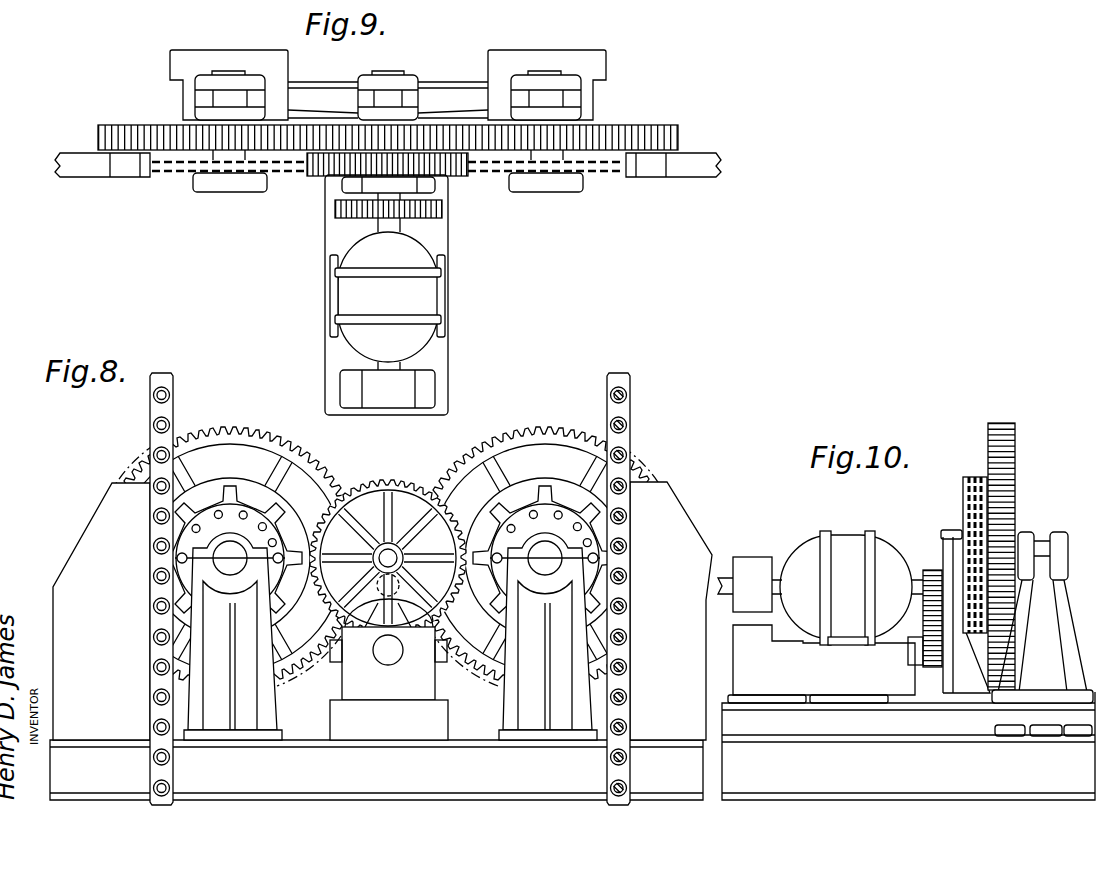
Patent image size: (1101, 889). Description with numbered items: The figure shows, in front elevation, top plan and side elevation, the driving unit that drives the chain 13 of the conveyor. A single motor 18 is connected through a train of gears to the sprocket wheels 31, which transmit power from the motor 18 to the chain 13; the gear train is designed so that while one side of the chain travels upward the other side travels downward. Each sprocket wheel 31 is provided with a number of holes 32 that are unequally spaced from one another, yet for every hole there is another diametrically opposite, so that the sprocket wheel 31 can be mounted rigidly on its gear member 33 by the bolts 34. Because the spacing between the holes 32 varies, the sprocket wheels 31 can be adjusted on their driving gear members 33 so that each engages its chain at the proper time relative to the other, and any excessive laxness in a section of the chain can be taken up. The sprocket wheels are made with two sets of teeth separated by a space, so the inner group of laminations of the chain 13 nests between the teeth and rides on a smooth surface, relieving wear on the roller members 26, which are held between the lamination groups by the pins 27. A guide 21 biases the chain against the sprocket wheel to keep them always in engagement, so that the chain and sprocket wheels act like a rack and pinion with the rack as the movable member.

In FIG. 8, the chain 13 is at (170, 407).
In FIG. 9, the motor 18 is at (428, 299).
In FIG. 10, the motor 18 is at (842, 542).
In FIG. 8, the guide 21 is at (147, 657).
In FIG. 8, the roller 26 is at (629, 552).
In FIG. 8, the pin 27 is at (627, 539).
In FIG. 9, the sprocket wheel 31 is at (604, 177).
In FIG. 8, the sprocket wheel 31 is at (243, 486).
In FIG. 10, the sprocket wheel 31 is at (963, 507).
In FIG. 8, the holes 32 is at (266, 524).
In FIG. 9, the gear member 33 is at (648, 128).
In FIG. 8, the gear member 33 is at (310, 470).
In FIG. 10, the gear member 33 is at (988, 432).
In FIG. 8, the bolts 34 is at (176, 558).